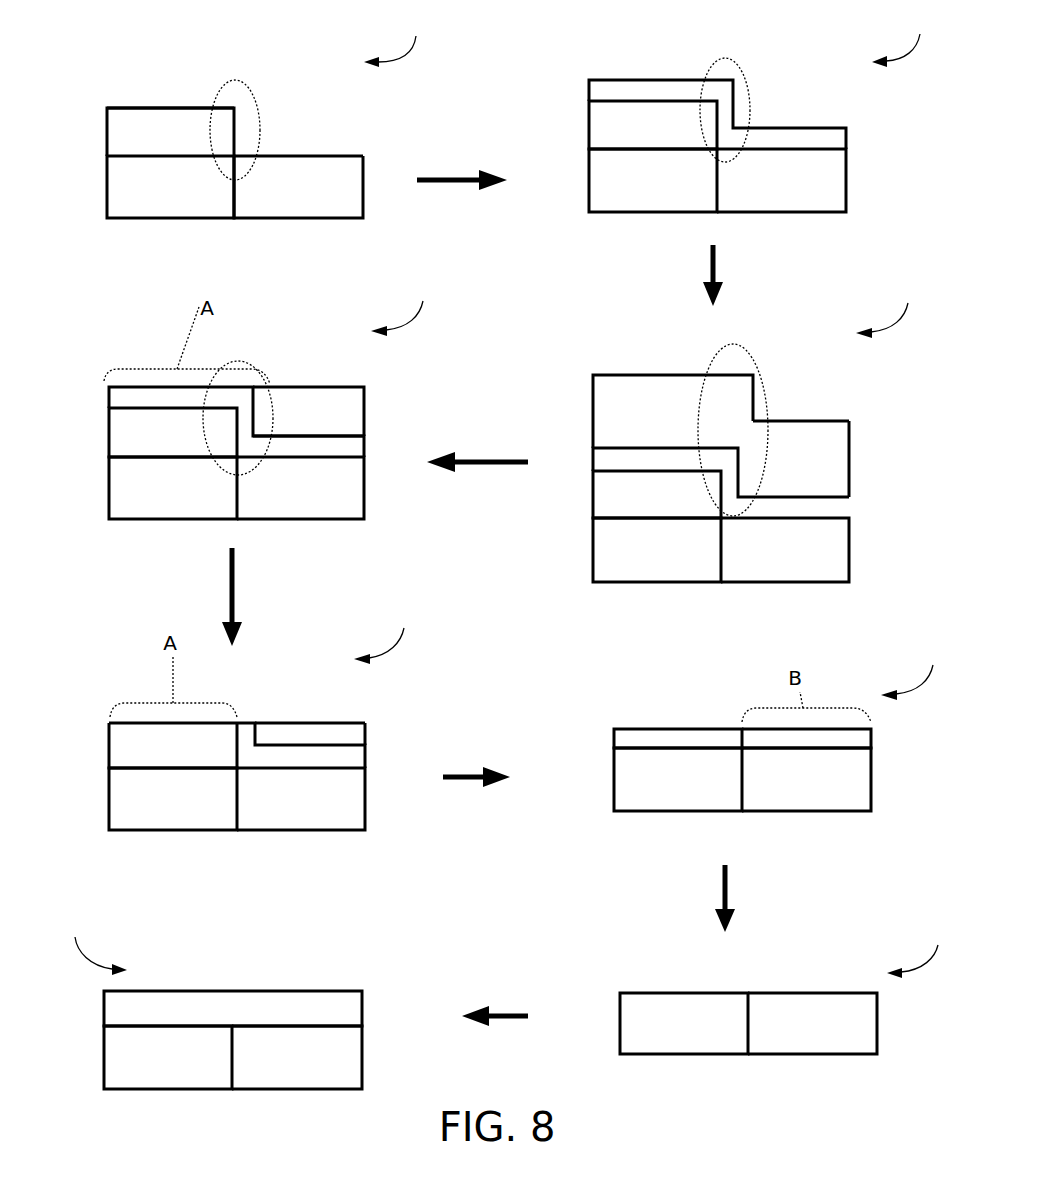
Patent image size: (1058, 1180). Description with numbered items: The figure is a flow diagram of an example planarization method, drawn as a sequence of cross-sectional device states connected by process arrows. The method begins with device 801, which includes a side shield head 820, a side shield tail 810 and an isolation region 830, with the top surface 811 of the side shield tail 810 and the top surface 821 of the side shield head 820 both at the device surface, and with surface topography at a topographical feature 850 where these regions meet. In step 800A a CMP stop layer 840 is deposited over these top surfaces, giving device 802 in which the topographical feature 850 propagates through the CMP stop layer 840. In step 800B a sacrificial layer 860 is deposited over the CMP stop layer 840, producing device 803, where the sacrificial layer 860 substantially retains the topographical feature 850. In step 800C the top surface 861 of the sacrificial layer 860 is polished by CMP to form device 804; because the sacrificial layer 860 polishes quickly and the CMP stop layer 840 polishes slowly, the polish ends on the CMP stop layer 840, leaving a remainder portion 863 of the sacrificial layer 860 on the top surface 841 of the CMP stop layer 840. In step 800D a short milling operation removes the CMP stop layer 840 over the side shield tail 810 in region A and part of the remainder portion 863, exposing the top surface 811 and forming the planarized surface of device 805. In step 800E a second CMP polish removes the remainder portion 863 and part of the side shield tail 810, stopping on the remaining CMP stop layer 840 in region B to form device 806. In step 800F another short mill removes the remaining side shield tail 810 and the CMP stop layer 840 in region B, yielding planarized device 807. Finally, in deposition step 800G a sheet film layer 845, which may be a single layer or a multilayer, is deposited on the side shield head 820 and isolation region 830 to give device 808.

The device 801 is at (400, 39).
The device 802 is at (904, 38).
The device 803 is at (891, 308).
The device 804 is at (406, 306).
The device 805 is at (388, 633).
The device 806 is at (916, 670).
The planarized device 807 is at (921, 949).
The device 808 is at (91, 943).
The step 800A is at (462, 168).
The step 800B is at (750, 275).
The step 800C is at (477, 450).
The physical removal process 800D is at (255, 597).
The CMP step 800E is at (476, 766).
The physical removal process 800F is at (750, 898).
The deposition step 800G is at (495, 1003).
The side shield tail 810 is at (123, 133).
The top surface of side shield tail 811 is at (172, 107).
The side shield head 820 is at (338, 163).
The top surface of side shield head 821 is at (288, 155).
The isolation region 830 is at (118, 193).
The CMP stop layer 840 is at (835, 135).
The top surface of CMP stop layer 841 is at (292, 433).
The sheet film layer 845 is at (345, 1008).
The topographical feature 850 is at (247, 82).
The sacrificial layer 860 is at (840, 428).
The top surface of sacrificial layer 861 is at (817, 418).
The remainder portion of sacrificial layer 863 is at (350, 395).